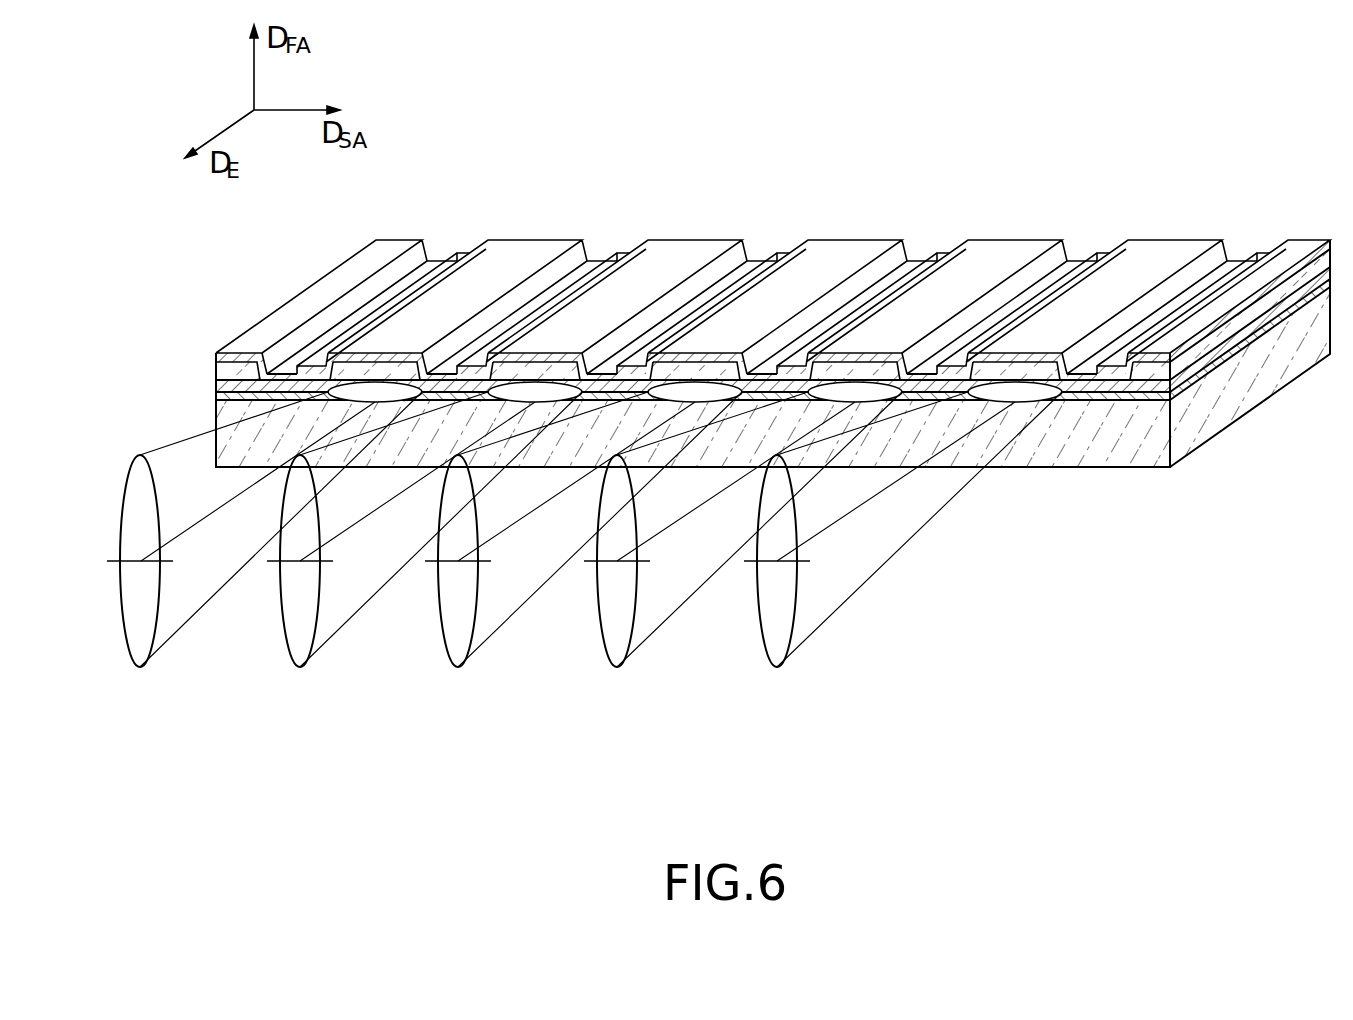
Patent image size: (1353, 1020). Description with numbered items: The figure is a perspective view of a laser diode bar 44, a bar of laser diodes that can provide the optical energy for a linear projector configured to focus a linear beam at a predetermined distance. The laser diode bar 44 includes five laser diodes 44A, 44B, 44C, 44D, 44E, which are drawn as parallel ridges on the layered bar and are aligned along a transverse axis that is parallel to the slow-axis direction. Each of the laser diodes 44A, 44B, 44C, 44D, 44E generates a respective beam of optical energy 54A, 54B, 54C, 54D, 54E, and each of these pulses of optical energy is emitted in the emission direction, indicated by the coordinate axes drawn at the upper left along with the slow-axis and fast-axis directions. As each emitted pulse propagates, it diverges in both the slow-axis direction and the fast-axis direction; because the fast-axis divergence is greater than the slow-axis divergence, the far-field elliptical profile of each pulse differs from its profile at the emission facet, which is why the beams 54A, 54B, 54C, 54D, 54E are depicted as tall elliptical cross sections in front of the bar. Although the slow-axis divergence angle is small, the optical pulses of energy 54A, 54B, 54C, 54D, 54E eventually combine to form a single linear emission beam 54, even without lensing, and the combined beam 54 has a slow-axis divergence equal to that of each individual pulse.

The laser diode bar 44 is at (773, 255).
The laser diode 44A is at (537, 238).
The laser diode 44B is at (693, 238).
The laser diode 44C is at (848, 238).
The laser diode 44D is at (1005, 238).
The laser diode 44E is at (1175, 238).
The single linear emission beam 54 is at (527, 642).
The beam of optical energy 54A is at (182, 622).
The beam of optical energy 54B is at (335, 630).
The beam of optical energy 54C is at (502, 620).
The beam of optical energy 54D is at (667, 618).
The beam of optical energy 54E is at (846, 561).